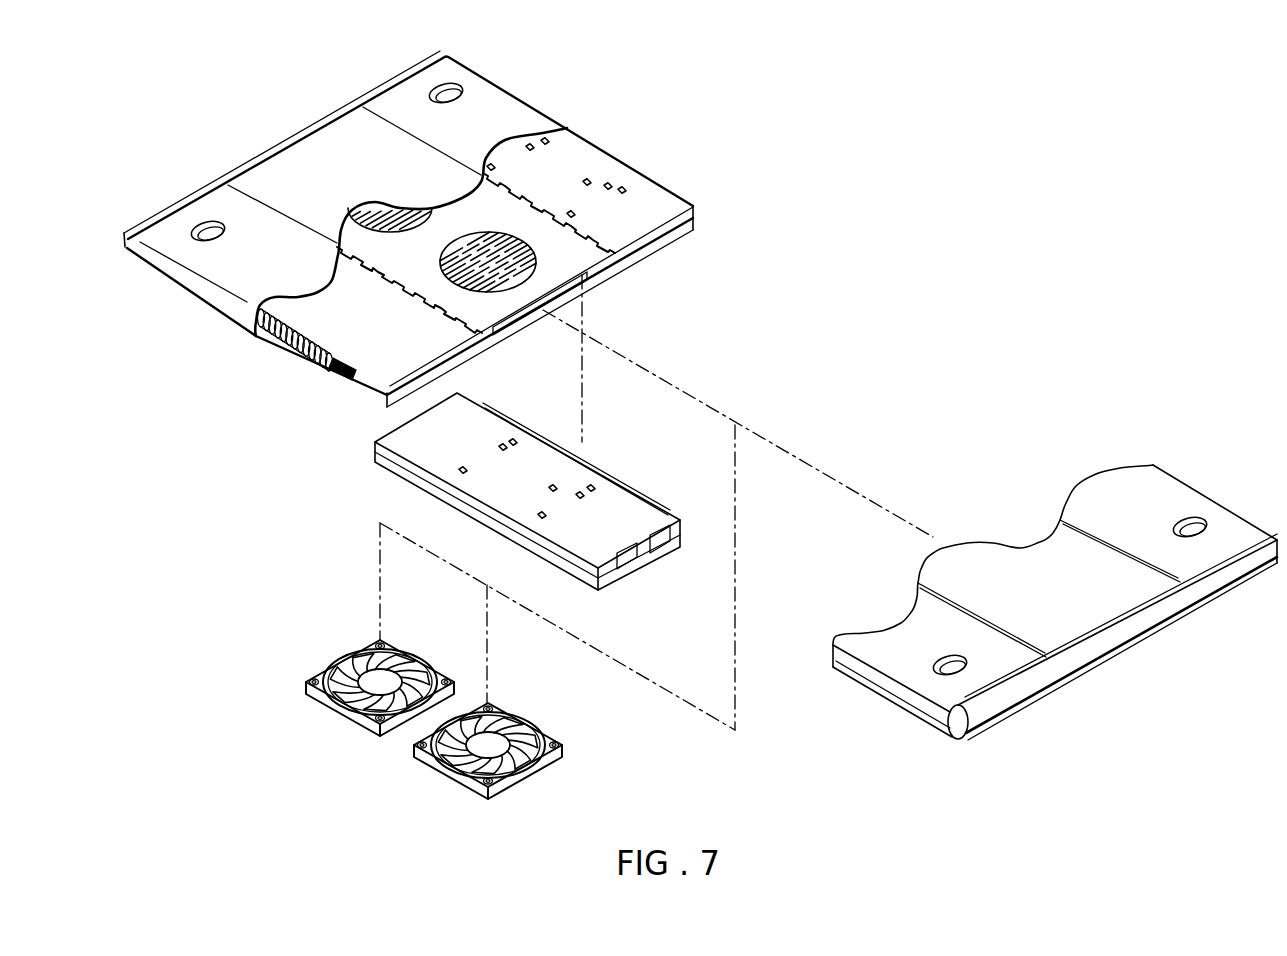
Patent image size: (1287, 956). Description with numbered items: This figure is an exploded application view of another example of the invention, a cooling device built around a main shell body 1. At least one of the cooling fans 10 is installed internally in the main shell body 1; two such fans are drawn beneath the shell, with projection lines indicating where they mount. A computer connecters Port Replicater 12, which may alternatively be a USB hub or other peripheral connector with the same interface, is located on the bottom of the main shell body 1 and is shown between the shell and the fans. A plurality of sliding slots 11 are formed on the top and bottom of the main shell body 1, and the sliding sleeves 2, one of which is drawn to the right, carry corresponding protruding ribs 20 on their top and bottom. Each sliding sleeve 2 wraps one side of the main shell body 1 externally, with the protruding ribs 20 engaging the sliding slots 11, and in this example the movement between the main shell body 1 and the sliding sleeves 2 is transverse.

The main shell body 1 is at (328, 172).
The sliding slots 11 is at (442, 148).
The computer connecters Port Replicater 12 is at (443, 453).
The cooling fans 10 is at (350, 658).
The sliding sleeves 2 is at (1060, 583).
The protruding ribs 20 is at (1099, 530).